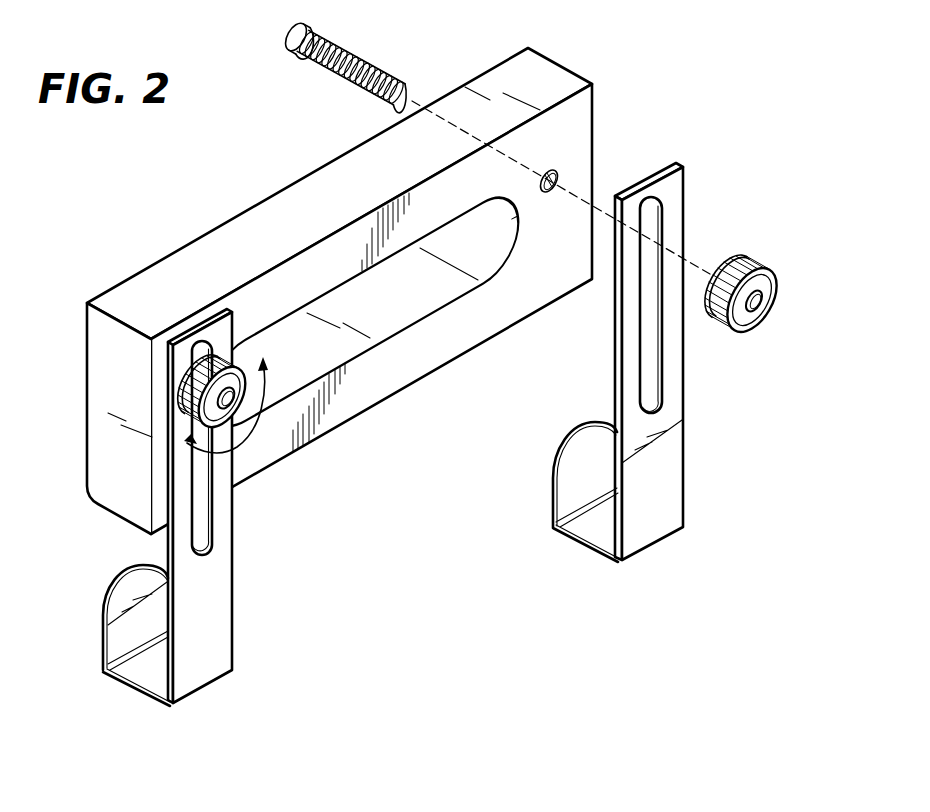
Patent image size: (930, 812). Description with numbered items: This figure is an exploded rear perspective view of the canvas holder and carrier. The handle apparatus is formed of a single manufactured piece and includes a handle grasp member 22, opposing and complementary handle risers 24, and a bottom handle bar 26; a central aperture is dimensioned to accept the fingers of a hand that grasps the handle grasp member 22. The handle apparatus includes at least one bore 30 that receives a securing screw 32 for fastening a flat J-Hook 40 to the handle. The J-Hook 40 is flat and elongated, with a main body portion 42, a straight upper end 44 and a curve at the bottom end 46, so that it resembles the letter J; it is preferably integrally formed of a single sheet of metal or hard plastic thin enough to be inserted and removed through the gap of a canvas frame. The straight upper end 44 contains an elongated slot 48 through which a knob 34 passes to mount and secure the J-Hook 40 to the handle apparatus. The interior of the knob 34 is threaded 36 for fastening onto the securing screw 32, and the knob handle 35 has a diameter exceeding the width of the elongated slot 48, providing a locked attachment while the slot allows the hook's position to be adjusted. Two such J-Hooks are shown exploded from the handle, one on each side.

The handle grasp member 22 is at (313, 270).
The handle risers 24 is at (98, 369).
The bottom handle bar 26 is at (355, 400).
The bore 30 is at (552, 176).
The securing screw 32 is at (367, 62).
The knob 34 is at (739, 305).
The knob handle 35 is at (745, 256).
The threaded interior 36 is at (762, 313).
The J-Hook 40 is at (625, 361).
The main body portion 42 is at (657, 471).
The straight upper end 44 is at (671, 170).
The bottom end 46 is at (585, 549).
The elongated slot 48 is at (653, 281).